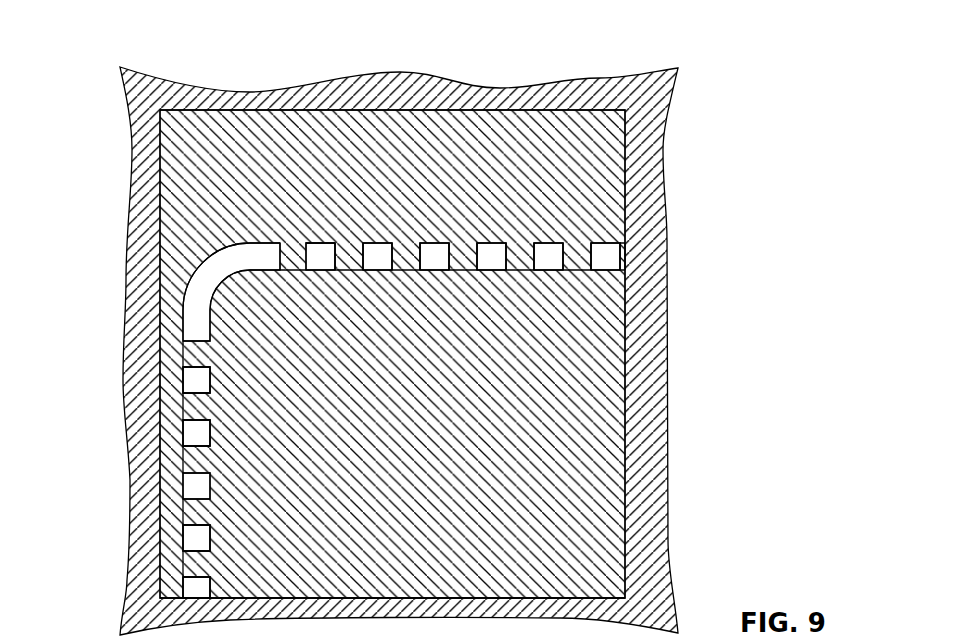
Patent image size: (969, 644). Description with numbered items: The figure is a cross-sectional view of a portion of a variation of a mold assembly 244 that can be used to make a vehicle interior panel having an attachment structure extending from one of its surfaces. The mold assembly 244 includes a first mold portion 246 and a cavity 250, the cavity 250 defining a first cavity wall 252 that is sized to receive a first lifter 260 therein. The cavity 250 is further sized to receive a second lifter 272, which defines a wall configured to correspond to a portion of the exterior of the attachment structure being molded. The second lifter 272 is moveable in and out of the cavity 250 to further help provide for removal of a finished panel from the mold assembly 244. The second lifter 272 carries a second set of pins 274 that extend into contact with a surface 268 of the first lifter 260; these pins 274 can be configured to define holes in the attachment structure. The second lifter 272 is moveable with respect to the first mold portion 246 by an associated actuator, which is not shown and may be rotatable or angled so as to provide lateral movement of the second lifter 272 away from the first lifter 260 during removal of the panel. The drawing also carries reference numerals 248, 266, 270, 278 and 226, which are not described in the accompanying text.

The mold assembly 244 is at (445, 328).
The first mold portion 246 is at (444, 328).
The outlet 248 is at (636, 240).
The cavity 250 is at (451, 108).
The first cavity wall 252 is at (186, 362).
The first lifter 260 is at (475, 326).
The cavity 266 is at (200, 433).
The surface 268 is at (291, 258).
The cavity 270 is at (192, 535).
The second lifter 272 is at (517, 183).
The second set of pins 274 is at (460, 250).
The pocket 278 is at (202, 297).
The pocket top 226 is at (318, 243).